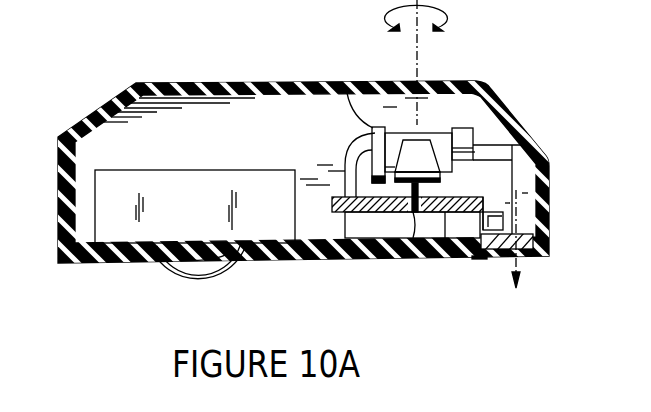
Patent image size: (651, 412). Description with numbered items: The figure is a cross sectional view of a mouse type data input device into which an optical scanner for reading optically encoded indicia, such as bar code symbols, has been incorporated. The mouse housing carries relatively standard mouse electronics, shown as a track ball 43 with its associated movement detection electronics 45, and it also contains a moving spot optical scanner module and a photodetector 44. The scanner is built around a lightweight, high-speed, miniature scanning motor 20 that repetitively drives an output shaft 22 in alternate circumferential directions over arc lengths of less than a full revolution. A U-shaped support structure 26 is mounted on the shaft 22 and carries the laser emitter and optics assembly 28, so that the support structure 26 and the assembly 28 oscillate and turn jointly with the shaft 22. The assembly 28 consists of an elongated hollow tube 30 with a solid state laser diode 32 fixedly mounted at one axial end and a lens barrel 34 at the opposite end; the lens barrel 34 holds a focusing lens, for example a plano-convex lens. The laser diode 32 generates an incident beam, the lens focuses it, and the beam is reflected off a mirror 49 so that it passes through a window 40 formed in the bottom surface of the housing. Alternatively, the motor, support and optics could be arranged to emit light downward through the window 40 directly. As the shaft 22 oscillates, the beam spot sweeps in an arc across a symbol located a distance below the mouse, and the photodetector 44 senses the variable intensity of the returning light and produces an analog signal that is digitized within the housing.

The scanning motor 20 is at (345, 225).
The output shaft 22 is at (394, 256).
The U-shaped support structure 26 is at (440, 179).
The laser emitter and optics assembly 28 is at (448, 100).
The elongated hollow tube 30 is at (392, 130).
The laser diode 32 is at (339, 88).
The lens barrel 34 is at (462, 142).
The window 40 is at (525, 247).
The track ball 43 is at (177, 257).
The photodetector 44 is at (490, 218).
The movement detection electronics 45 is at (172, 170).
The mirror 49 is at (519, 133).